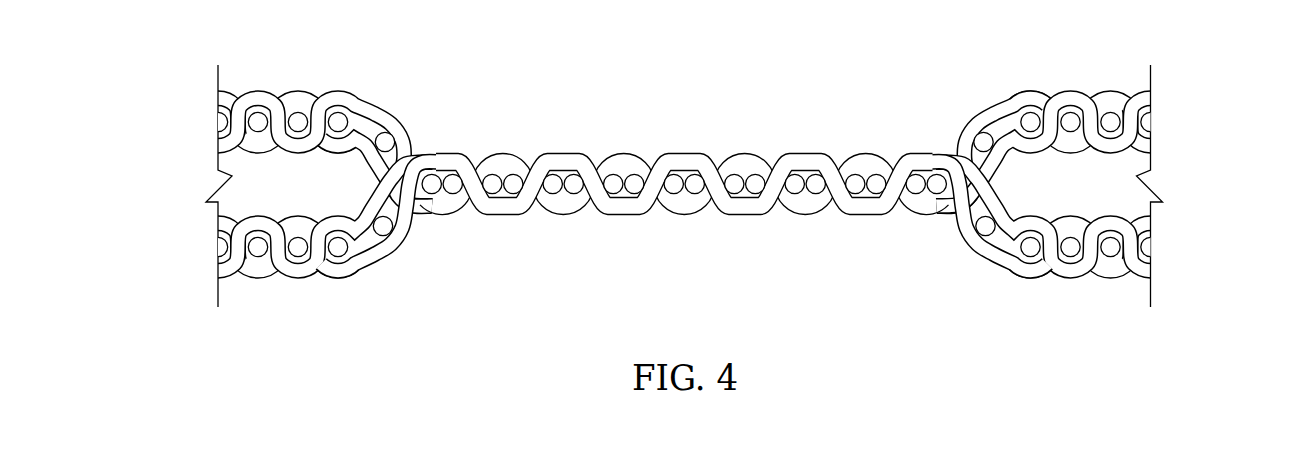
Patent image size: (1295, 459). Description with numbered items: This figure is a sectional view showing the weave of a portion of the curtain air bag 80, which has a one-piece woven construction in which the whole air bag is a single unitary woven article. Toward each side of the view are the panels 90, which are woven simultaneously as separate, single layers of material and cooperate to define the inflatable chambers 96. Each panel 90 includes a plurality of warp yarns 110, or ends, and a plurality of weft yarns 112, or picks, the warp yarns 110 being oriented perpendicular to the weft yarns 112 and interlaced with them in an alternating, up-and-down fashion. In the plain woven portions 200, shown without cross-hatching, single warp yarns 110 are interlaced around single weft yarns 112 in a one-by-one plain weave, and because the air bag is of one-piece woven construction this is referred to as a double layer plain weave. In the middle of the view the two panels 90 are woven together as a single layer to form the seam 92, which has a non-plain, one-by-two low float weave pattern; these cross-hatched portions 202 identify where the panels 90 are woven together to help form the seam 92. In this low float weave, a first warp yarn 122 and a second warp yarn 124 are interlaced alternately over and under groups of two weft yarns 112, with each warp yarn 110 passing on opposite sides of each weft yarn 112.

The curtain air bag 80 is at (672, 172).
The panels 90 is at (653, 172).
The seam 92 is at (684, 154).
The portions woven with low float weave 202 is at (684, 154).
The inflatable chambers 96 is at (672, 172).
The plain woven portions 200 is at (672, 172).
The warp yarns 110 is at (218, 101).
The weft yarns 112 is at (297, 113).
The first warp yarn 122 is at (624, 155).
The second warp yarn 124 is at (684, 188).